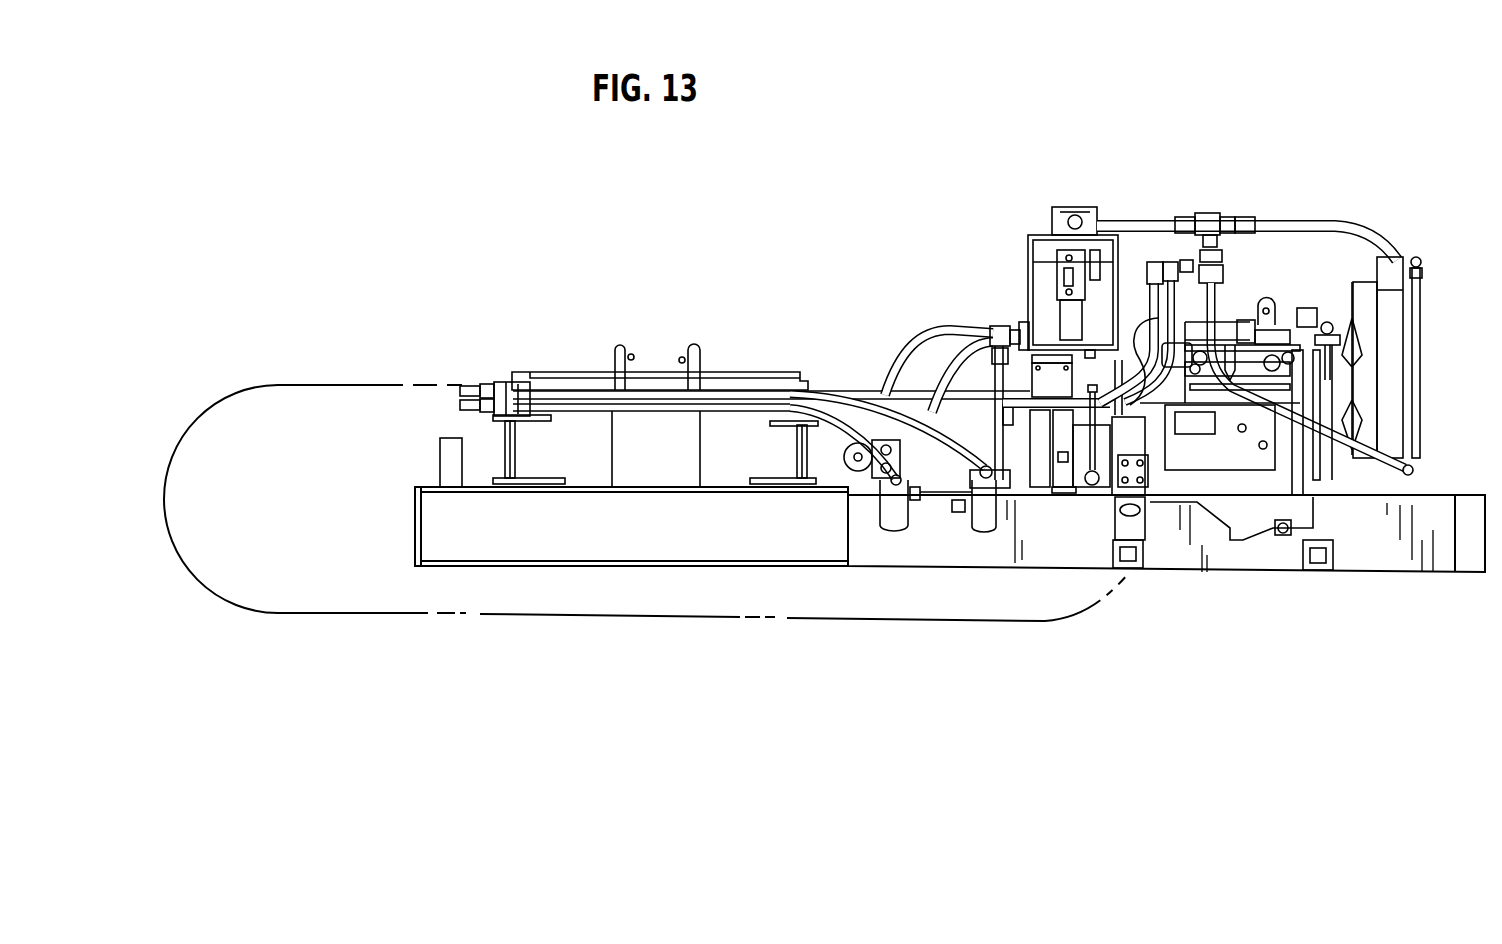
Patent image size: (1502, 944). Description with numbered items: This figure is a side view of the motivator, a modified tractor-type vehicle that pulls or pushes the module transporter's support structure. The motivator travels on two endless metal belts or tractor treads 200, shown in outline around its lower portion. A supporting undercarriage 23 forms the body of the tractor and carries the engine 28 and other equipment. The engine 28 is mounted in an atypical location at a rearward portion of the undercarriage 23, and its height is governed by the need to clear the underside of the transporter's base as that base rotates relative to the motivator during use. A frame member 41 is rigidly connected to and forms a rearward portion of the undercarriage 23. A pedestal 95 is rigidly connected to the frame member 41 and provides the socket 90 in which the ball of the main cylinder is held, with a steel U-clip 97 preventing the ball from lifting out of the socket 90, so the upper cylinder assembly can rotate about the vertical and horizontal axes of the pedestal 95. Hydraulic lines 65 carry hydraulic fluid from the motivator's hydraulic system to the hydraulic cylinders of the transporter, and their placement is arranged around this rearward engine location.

The tractor treads 200 is at (326, 510).
The frame member 41 is at (523, 537).
The undercarriage 23 is at (963, 582).
The U-clip 97 is at (634, 372).
The socket 90 is at (640, 385).
The pedestal 95 is at (623, 450).
The hydraulic lines 65 is at (922, 337).
The engine 28 is at (1276, 306).